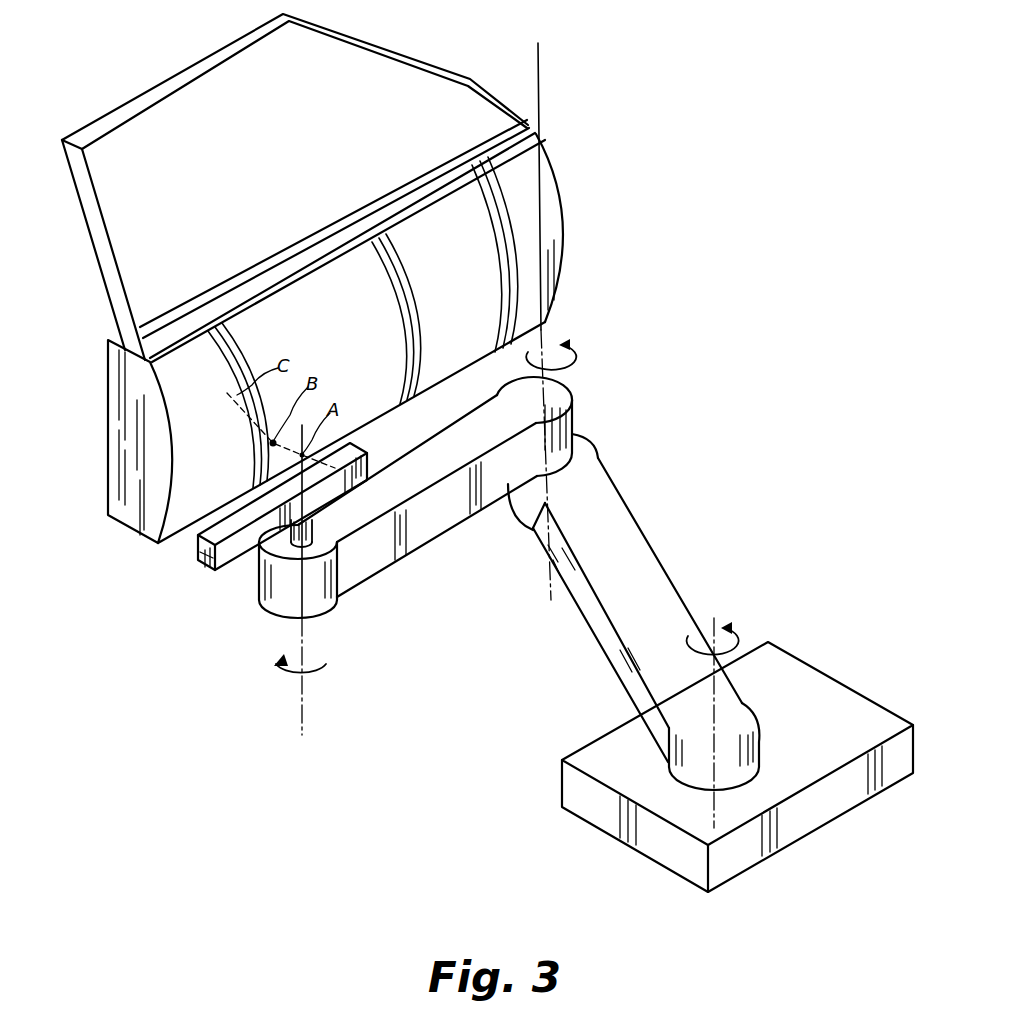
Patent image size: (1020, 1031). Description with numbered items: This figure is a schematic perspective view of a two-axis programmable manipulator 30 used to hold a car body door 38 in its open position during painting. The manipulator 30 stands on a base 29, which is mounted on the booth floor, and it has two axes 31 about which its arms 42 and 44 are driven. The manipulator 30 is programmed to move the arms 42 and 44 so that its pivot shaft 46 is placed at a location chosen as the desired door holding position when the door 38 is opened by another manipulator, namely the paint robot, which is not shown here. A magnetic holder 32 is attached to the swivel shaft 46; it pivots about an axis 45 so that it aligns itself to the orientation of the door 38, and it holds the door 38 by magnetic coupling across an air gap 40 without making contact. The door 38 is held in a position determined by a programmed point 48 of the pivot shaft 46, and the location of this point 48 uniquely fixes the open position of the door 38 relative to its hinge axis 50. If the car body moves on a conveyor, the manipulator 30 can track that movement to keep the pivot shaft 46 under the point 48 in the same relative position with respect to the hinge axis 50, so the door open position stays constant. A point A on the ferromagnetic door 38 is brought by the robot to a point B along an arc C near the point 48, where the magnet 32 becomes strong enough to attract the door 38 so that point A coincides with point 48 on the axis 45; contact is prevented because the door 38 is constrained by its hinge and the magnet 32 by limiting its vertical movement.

The base 29 is at (806, 664).
The programmable manipulator 30 is at (621, 464).
The axes 31 is at (563, 346).
The magnetic holder 32 is at (208, 565).
The door 38 is at (108, 438).
The air gap 40 is at (198, 545).
The arm 42 is at (641, 524).
The arm 44 is at (433, 540).
The axis 45 is at (304, 634).
The pivot shaft 46 is at (287, 540).
The programmed point 48 is at (302, 456).
The hinge axis 50 is at (541, 77).